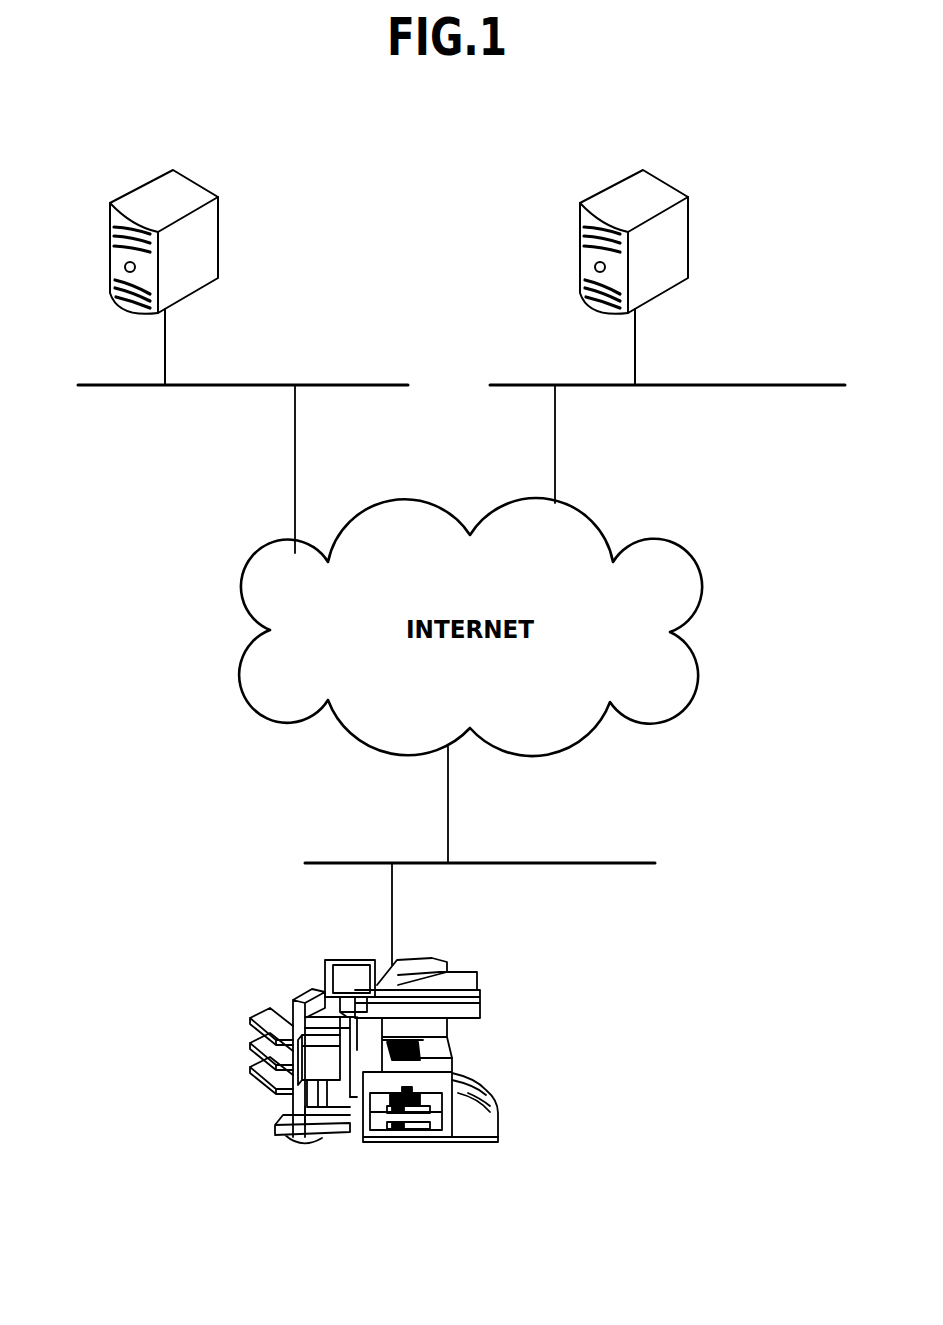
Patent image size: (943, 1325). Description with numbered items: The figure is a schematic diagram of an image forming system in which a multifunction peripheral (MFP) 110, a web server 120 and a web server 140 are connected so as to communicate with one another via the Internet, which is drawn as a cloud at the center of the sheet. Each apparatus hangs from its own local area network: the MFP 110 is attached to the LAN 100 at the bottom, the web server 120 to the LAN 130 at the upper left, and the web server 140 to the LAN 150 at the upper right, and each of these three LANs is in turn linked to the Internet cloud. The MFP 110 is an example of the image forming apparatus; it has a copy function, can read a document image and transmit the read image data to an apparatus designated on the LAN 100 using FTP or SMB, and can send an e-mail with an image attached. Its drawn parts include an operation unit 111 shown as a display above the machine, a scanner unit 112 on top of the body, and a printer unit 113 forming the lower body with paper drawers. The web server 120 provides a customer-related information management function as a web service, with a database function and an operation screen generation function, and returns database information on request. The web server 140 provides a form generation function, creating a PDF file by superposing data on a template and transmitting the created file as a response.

The local area network 100 is at (534, 862).
The multifunction peripheral 110 is at (333, 1140).
The operation unit 111 is at (352, 960).
The scanner unit 112 is at (433, 983).
The printer unit 113 is at (437, 1065).
The web server 120 is at (197, 182).
The local area network 130 is at (247, 383).
The web server 140 is at (667, 182).
The local area network 150 is at (717, 383).